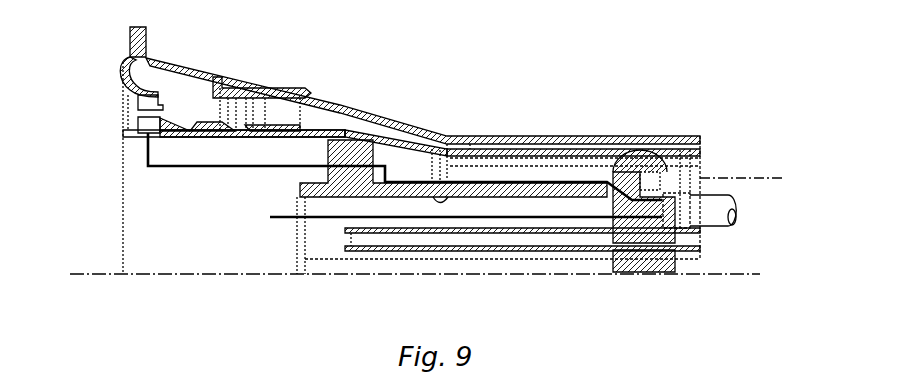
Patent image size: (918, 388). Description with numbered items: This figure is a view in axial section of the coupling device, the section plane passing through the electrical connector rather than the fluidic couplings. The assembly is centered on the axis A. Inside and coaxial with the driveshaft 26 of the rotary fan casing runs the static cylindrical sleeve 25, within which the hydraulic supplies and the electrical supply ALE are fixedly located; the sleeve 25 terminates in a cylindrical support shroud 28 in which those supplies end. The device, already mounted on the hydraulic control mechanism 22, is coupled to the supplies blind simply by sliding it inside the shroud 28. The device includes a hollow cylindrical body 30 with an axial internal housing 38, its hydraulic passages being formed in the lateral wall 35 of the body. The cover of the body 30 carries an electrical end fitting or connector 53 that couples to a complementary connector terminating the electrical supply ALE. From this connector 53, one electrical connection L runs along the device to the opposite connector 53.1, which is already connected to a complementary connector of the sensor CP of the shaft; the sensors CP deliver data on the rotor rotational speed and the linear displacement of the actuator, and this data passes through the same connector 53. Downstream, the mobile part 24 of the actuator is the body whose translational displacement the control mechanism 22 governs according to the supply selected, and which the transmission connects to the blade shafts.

The axis A is at (82, 272).
The sensors CP is at (138, 102).
The opposite connector 53.1 is at (138, 123).
The driveshaft 26 is at (334, 106).
The electrical connection L is at (250, 163).
The lateral wall 35 is at (400, 172).
The cylindrical support shroud 28 is at (582, 138).
The cylindrical body 30 is at (521, 170).
The axial internal housing 38 is at (447, 178).
The electrical connector 53 is at (677, 178).
The static cylindrical sleeve 25 is at (759, 171).
The electrical supply ALE is at (738, 216).
The hydraulic control mechanism 22 is at (333, 271).
The mobile part 24 is at (408, 263).